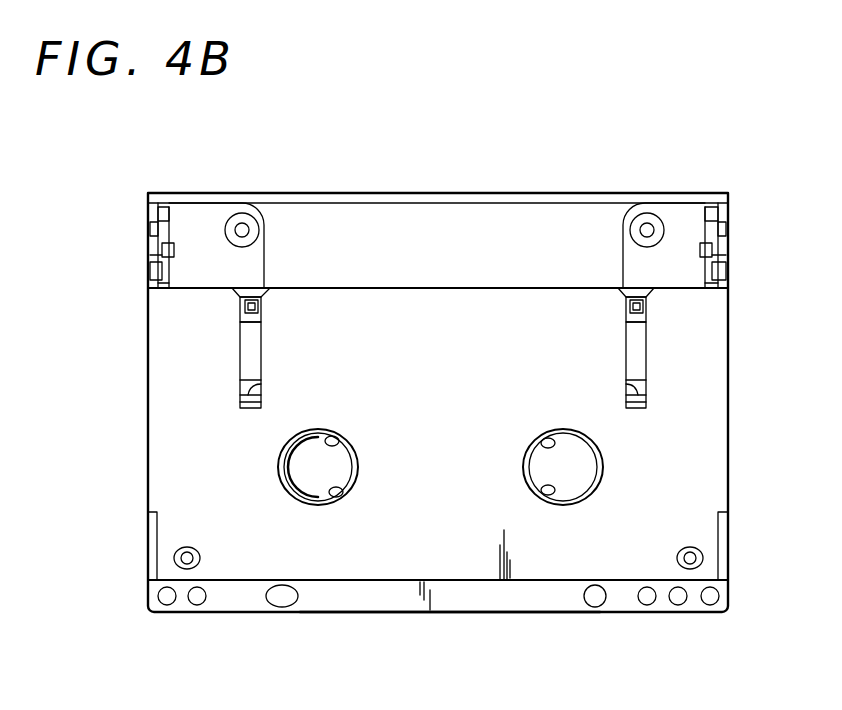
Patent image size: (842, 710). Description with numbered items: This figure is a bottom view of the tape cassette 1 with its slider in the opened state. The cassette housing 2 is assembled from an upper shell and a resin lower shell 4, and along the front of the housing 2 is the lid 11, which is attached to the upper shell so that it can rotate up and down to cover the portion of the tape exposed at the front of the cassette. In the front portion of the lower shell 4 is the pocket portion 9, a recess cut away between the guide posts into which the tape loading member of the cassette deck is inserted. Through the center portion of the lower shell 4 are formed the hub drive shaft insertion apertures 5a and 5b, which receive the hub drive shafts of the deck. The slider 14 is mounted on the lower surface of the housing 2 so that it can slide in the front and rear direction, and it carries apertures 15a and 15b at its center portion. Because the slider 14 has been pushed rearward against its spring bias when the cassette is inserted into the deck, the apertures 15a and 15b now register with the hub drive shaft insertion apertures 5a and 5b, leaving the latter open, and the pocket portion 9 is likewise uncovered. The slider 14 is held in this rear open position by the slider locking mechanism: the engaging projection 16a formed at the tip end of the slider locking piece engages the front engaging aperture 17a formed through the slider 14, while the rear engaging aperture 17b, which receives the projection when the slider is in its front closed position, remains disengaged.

The tape cassette 1 is at (281, 613).
The housing 2 is at (542, 614).
The lower shell 4 is at (342, 602).
The hub drive shaft insertion aperture 5a is at (548, 491).
The hub drive shaft insertion aperture 5b is at (337, 492).
The pocket portion 9 is at (372, 245).
The lid 11 is at (452, 196).
The slider 14 is at (178, 378).
The aperture 15a is at (547, 442).
The aperture 15b is at (336, 443).
The engaging projection 16a is at (242, 305).
The front engaging aperture 17a is at (258, 305).
The rear engaging aperture 17b is at (252, 390).